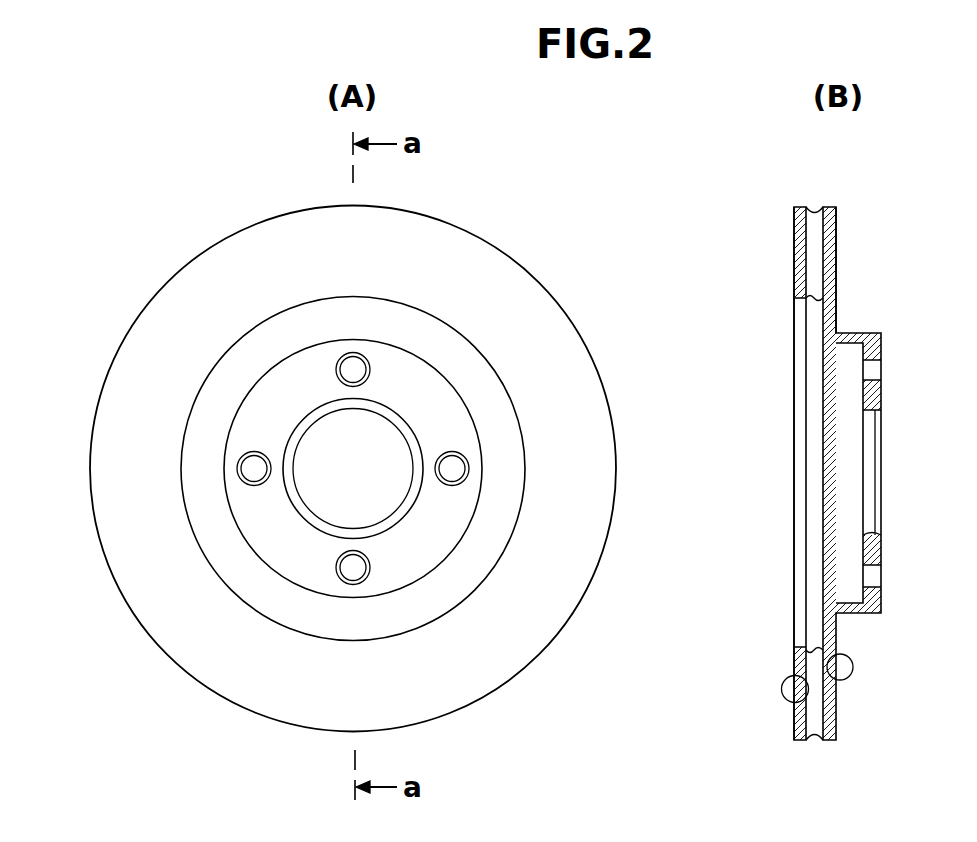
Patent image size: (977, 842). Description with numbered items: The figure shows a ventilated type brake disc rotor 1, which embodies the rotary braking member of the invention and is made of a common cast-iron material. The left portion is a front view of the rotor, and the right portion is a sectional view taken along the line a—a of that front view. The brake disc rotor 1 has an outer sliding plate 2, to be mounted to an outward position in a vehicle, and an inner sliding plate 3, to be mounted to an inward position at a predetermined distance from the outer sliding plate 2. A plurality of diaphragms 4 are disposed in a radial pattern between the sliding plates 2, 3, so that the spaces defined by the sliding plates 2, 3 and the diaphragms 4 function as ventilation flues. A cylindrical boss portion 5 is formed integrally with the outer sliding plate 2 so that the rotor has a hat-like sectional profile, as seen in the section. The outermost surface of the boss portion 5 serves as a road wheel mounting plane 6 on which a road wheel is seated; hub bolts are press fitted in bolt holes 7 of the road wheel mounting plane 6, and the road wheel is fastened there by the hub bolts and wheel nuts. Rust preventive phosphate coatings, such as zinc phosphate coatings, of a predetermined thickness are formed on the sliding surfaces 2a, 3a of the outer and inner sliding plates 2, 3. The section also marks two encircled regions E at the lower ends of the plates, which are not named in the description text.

The brake disc rotor 1 is at (175, 702).
The outer sliding plate 2 is at (838, 243).
The sliding surface 2a is at (836, 222).
The inner sliding plate 3 is at (515, 648).
The sliding surface 3a is at (792, 242).
The diaphragms 4 is at (812, 228).
The cylindrical boss portion 5 is at (858, 332).
The road wheel mounting plane 6 is at (884, 345).
The bolt holes 7 is at (258, 470).
The enlarged portions E is at (854, 667).